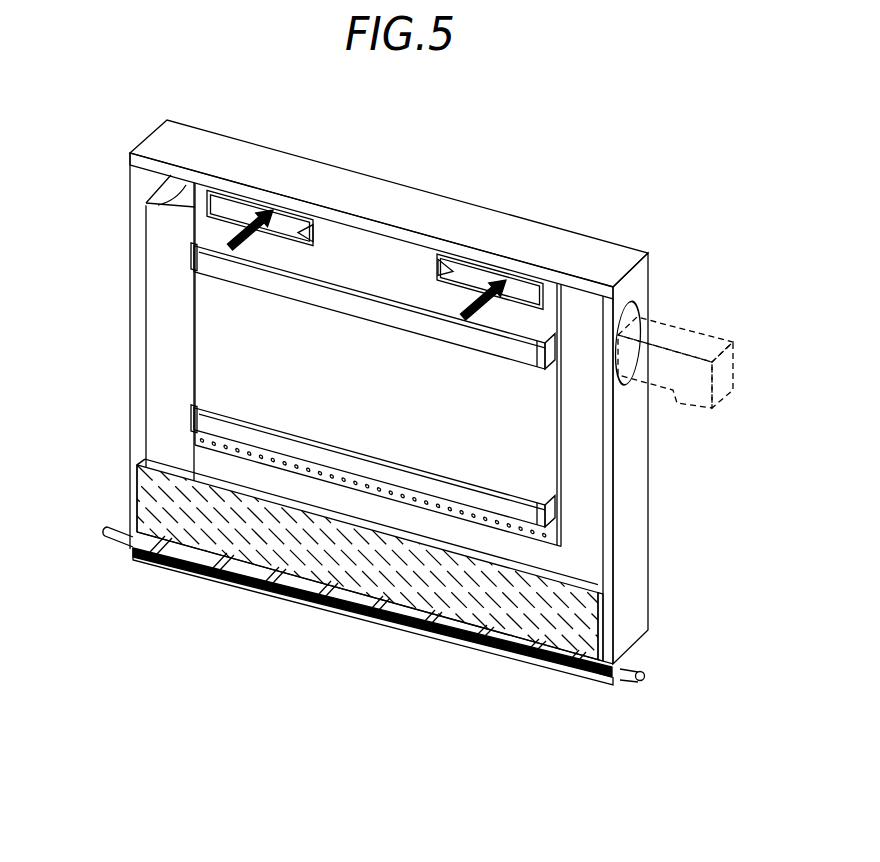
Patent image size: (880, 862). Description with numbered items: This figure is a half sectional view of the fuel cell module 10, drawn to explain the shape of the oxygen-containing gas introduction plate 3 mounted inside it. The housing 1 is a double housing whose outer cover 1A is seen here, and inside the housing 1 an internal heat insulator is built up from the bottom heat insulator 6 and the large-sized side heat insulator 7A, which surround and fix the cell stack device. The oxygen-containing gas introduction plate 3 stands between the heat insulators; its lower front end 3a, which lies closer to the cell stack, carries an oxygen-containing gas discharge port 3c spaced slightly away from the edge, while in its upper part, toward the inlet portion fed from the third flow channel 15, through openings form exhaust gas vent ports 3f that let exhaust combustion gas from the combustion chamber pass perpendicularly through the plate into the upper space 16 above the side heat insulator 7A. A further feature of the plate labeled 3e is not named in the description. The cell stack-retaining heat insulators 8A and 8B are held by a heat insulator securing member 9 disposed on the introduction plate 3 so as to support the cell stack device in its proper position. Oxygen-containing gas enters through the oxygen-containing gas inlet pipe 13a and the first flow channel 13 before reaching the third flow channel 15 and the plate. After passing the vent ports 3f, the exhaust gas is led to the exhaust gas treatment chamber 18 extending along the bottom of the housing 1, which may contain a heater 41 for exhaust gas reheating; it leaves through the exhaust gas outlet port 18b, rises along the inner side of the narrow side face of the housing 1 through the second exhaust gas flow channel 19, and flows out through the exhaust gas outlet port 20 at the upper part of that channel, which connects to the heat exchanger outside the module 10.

The fuel cell module 10 is at (648, 219).
The outer cover 1A is at (500, 243).
The housing 1 is at (395, 376).
The third flow channel 15 is at (314, 208).
The upper space 16 is at (146, 203).
The second exhaust gas flow channel 19 is at (609, 486).
The side heat insulator 7A is at (172, 298).
The oxygen-containing gas introduction plate 3 is at (336, 342).
The slot opening in plate 3e is at (393, 255).
The exhaust gas vent port 3f is at (437, 268).
The lower front end 3a is at (538, 539).
The oxygen-containing gas discharge port 3c is at (204, 447).
The cell stack-retaining heat insulator 8A is at (191, 410).
The cell stack-retaining heat insulator 8B is at (191, 248).
The heat insulator securing member 9 is at (557, 337).
The bottom heat insulator 6 is at (415, 561).
The exhaust gas treatment chamber 18 is at (443, 623).
The exhaust gas outlet port 18b is at (613, 667).
The first flow channel 13 is at (530, 662).
The oxygen-containing gas inlet pipe 13a is at (626, 684).
The heater 41 is at (113, 545).
The exhaust gas outlet port 20 is at (692, 333).